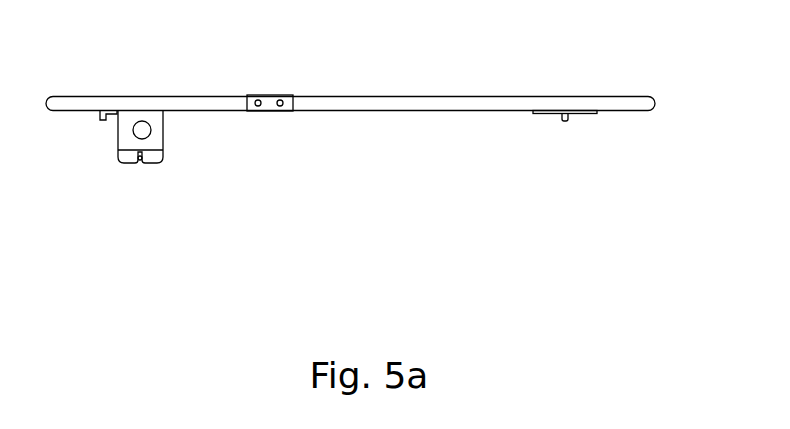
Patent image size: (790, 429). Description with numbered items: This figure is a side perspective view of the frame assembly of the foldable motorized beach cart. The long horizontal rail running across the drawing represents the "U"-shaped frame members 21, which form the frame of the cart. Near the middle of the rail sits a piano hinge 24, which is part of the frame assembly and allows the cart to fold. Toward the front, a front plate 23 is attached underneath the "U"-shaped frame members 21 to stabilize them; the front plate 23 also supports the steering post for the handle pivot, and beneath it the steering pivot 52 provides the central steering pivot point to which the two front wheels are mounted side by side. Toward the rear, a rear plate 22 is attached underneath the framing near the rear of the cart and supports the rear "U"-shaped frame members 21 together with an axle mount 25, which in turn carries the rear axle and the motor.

The "U"-shaped frame members 21 is at (487, 97).
The rear plate 22 is at (118, 113).
The front plate 23 is at (547, 113).
The piano hinge 24 is at (273, 93).
The axle mount 25 is at (110, 188).
The steering pivot 52 is at (570, 120).